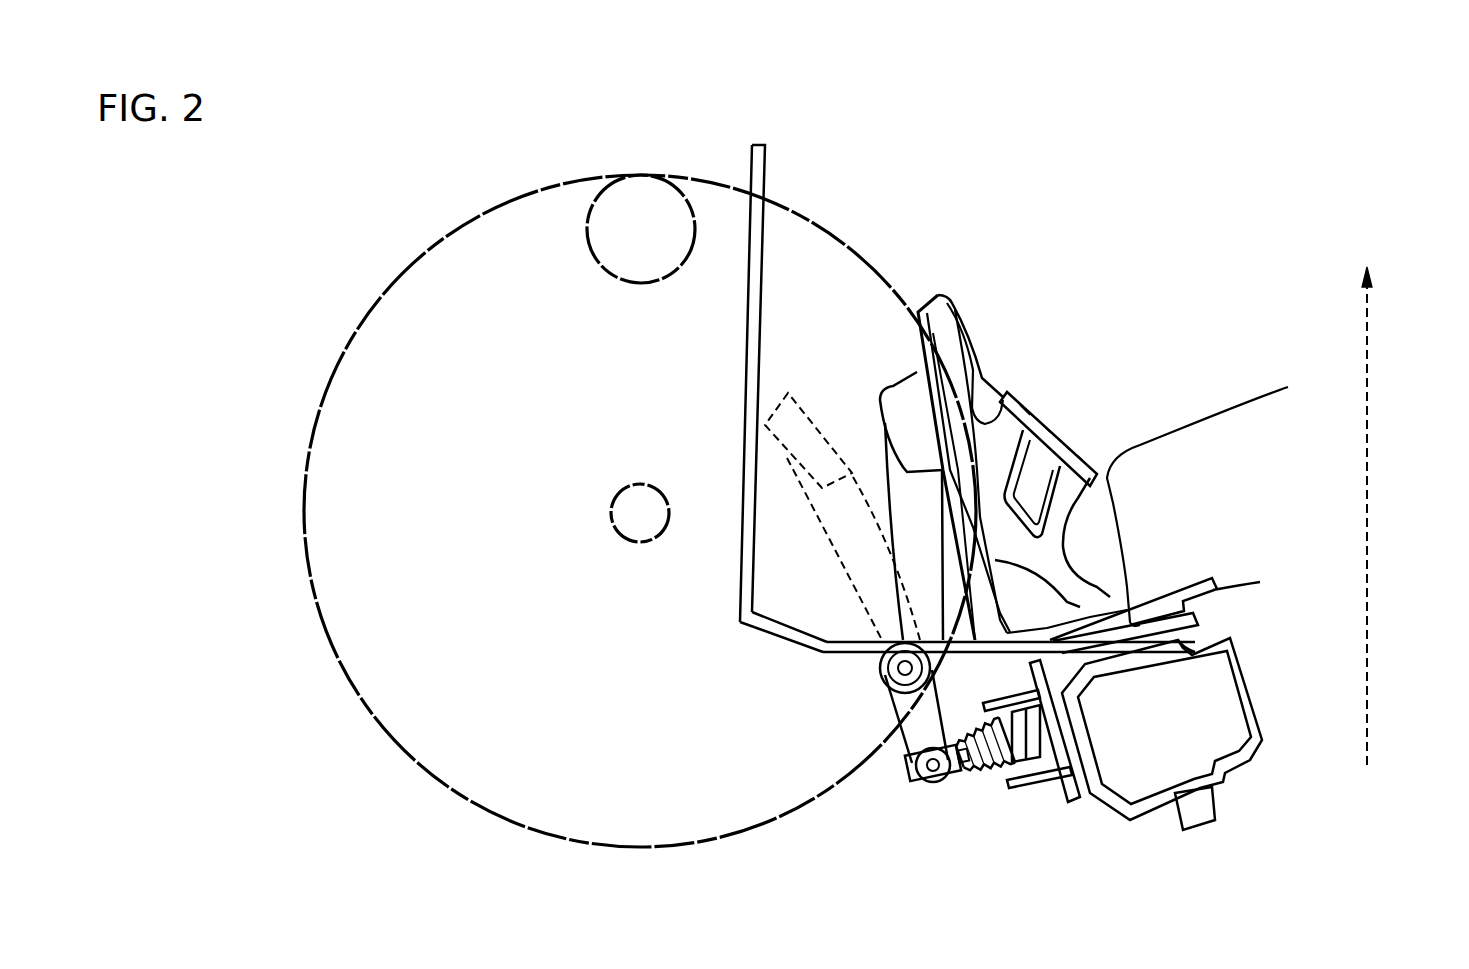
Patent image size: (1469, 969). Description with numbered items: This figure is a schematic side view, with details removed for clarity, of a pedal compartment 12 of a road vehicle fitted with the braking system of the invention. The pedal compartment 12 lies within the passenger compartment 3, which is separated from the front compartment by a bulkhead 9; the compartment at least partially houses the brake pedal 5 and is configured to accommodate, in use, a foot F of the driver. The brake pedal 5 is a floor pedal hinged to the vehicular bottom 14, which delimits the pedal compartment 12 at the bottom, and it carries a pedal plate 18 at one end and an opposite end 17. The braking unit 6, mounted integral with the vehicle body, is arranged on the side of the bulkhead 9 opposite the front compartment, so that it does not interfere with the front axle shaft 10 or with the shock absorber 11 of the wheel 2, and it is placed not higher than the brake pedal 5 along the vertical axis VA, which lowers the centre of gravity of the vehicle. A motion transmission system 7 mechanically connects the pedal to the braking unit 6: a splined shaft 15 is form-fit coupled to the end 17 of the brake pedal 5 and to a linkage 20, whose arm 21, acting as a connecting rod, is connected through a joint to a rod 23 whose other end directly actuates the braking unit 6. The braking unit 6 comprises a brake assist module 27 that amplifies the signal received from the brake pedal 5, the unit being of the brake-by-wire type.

The wheel 2 is at (345, 345).
The passenger compartment 3 is at (1295, 200).
The brake pedal 5 is at (872, 508).
The braking unit 6 is at (1108, 815).
The motion transmission system 7 is at (903, 757).
The bulkhead 9 is at (755, 162).
The front axle shaft 10 is at (610, 530).
The shock absorber 11 is at (625, 285).
The pedal compartment 12 is at (1005, 290).
The vehicular bottom 14 is at (972, 648).
The splined shaft 15 is at (890, 685).
The end of the brake pedal 17 is at (880, 658).
The pedal plate 18 is at (897, 385).
The linkage 20 is at (930, 790).
The arm 21 is at (915, 733).
The rod 23 is at (960, 768).
The brake assist module 27 is at (1210, 715).
The foot F is at (1020, 420).
The vertical axis VA is at (1367, 458).